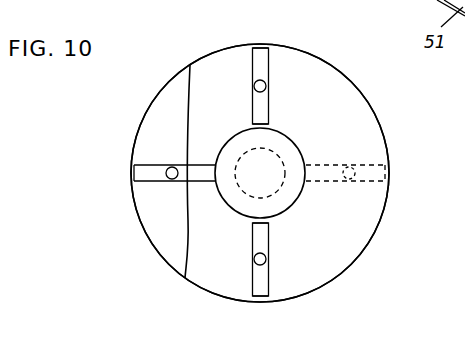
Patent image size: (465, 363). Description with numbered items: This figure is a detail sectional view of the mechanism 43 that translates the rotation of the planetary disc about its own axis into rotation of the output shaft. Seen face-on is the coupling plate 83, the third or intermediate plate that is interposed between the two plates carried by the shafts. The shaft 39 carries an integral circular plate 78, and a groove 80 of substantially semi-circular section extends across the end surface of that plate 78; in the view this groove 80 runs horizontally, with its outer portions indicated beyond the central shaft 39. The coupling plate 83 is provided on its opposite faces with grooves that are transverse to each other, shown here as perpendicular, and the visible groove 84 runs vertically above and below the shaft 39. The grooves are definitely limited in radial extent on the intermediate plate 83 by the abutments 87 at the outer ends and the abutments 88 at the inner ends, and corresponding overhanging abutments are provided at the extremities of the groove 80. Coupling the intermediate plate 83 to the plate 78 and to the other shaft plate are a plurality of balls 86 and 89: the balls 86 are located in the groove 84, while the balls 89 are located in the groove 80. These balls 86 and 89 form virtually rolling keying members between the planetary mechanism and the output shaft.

The shaft 39 is at (280, 152).
The mechanism 43 is at (400, 212).
The circular plate 78 is at (131, 137).
The groove 80 is at (138, 183).
The coupling plate 83 is at (377, 140).
The groove 84 is at (263, 62).
The balls 86 is at (265, 87).
The abutment 87 is at (262, 45).
The abutment 88 is at (268, 118).
The balls 89 is at (172, 179).